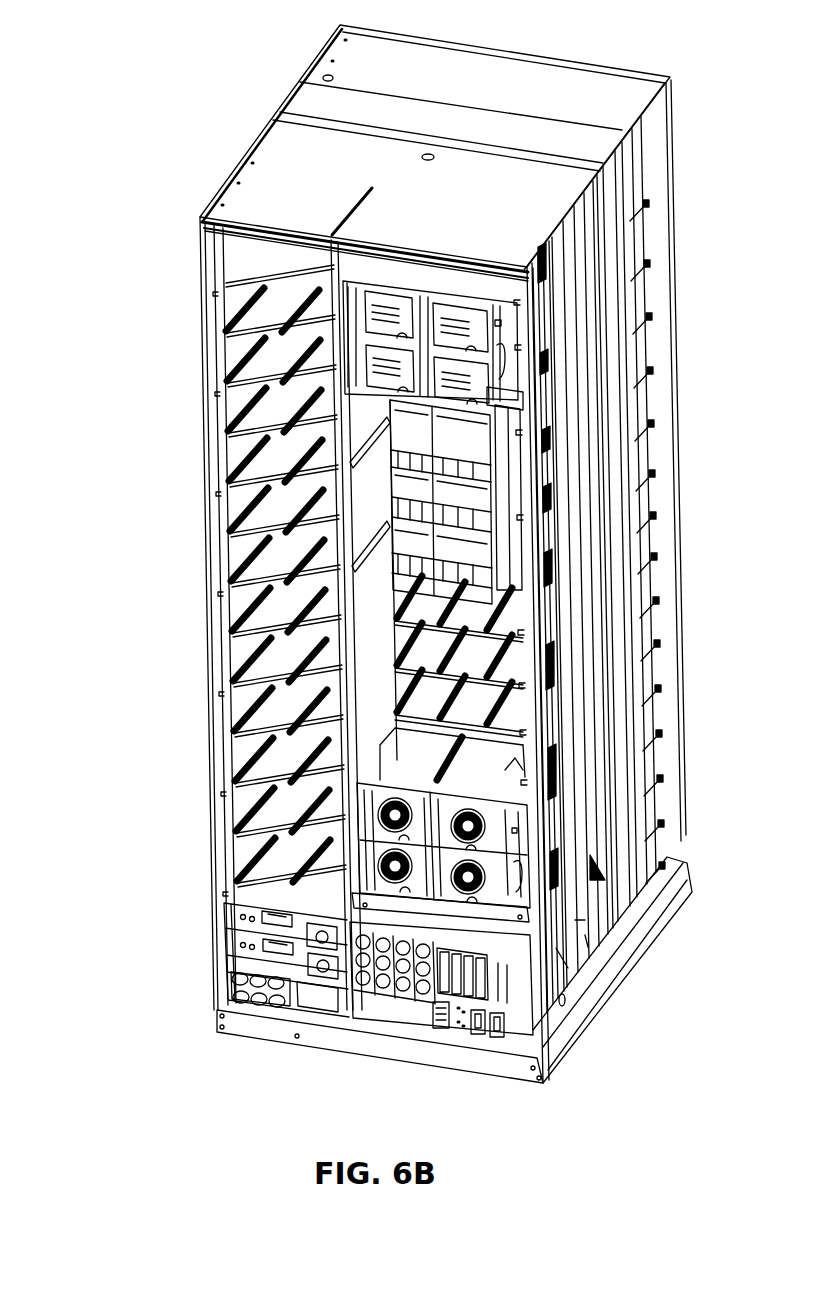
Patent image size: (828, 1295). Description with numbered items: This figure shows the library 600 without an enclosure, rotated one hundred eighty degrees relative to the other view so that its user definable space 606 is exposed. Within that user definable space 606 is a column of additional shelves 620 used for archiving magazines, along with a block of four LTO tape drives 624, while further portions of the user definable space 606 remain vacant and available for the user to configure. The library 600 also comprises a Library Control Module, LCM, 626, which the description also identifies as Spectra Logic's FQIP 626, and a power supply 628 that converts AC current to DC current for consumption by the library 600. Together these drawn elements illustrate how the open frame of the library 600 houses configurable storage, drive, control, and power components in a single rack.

The T-950 library 600 is at (206, 62).
The user definable space 606 is at (370, 484).
The additional shelves 620 is at (285, 566).
The block of four LTO-3 tape drives 624 is at (376, 781).
The Library Control Module 626 is at (368, 1030).
The power supply 628 is at (203, 957).